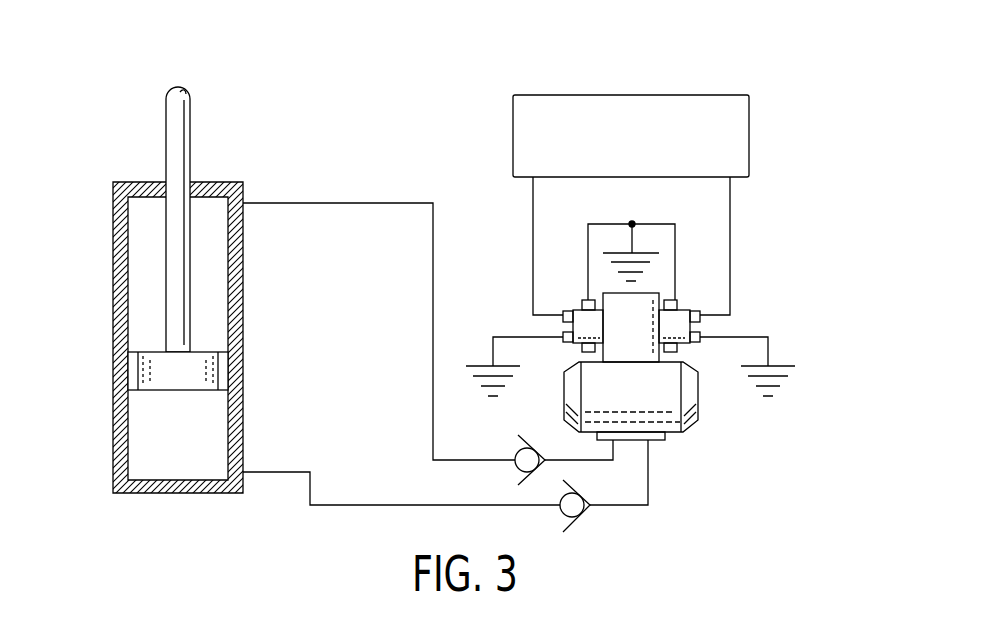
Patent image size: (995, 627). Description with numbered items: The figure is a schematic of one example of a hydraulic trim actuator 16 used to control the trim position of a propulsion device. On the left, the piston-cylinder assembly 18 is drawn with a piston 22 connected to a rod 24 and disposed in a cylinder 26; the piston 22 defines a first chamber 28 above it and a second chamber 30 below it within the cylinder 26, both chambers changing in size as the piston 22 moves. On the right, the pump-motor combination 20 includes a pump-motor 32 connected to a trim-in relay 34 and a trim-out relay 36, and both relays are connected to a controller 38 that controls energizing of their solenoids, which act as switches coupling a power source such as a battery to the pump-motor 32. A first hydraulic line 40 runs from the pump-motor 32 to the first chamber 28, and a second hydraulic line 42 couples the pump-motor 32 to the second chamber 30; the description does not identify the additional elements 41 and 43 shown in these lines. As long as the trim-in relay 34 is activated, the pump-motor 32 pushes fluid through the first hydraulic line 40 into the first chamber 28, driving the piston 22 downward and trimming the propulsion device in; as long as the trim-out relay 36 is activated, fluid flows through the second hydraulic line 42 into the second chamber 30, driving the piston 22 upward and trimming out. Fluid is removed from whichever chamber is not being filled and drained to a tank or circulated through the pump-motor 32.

The hydraulic trim actuator 16 is at (447, 115).
The piston-cylinder assembly 18 is at (100, 360).
The pump-motor combination 20 is at (712, 437).
The piston 22 is at (212, 368).
The rod 24 is at (166, 140).
The cylinder 26 is at (243, 302).
The first chamber 28 is at (208, 247).
The second chamber 30 is at (208, 445).
The pump-motor 32 is at (672, 420).
The trim-in relay 34 is at (580, 330).
The trim-out relay 36 is at (683, 330).
The controller 38 is at (749, 138).
The first hydraulic line 40 is at (332, 203).
The first check valve 41 is at (517, 453).
The second hydraulic line 42 is at (330, 505).
The second check valve 43 is at (586, 519).